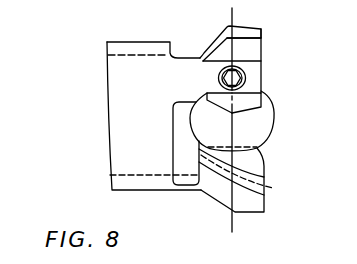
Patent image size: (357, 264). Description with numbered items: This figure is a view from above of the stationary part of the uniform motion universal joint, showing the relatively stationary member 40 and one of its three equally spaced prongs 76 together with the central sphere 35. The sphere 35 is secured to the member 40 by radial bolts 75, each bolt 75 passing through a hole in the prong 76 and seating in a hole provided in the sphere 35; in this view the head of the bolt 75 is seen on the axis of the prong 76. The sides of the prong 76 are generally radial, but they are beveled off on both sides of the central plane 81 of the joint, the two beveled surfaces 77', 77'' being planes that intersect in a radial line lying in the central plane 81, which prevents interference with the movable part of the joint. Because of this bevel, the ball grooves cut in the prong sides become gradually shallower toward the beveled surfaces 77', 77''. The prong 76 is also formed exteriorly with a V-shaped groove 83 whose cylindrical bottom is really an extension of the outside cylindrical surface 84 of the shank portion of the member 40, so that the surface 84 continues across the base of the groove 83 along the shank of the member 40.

The central sphere 35 is at (272, 129).
The stationary member 40 is at (108, 132).
The radial bolt 75 is at (238, 78).
The prong 76 is at (218, 38).
The beveled side surface 77' is at (218, 114).
The beveled side surface 77'' is at (250, 114).
The central plane 81 is at (232, 228).
The V-shaped groove 83 is at (249, 44).
The outside cylindrical surface 84 is at (141, 42).